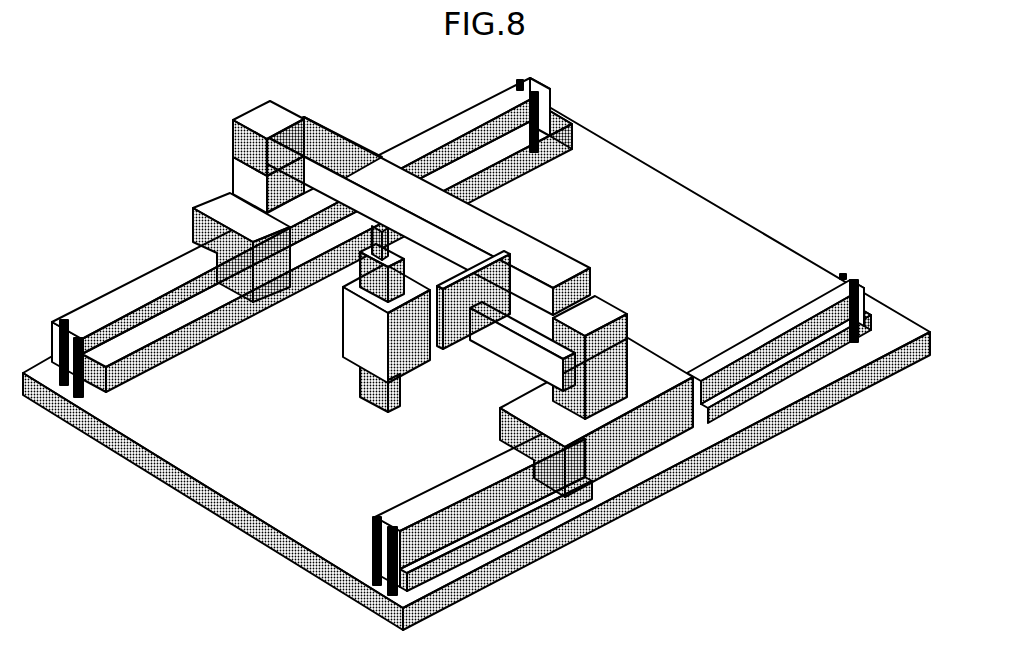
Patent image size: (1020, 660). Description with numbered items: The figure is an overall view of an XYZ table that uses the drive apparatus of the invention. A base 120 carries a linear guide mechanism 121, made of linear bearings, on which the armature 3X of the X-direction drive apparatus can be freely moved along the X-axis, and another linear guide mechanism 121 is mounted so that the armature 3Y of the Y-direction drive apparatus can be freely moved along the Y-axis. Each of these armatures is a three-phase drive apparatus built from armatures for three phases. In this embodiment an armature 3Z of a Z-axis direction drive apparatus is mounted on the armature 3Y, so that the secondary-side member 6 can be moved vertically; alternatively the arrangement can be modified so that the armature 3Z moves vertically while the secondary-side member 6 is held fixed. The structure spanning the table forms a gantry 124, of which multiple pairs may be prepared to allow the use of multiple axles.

The base 120 is at (197, 465).
The linear guide mechanism 121 is at (102, 360).
The secondary-side member 6 is at (133, 277).
The armature of the X-direction drive apparatus 3X is at (210, 200).
The armature of the Y-direction drive apparatus 3Y is at (488, 258).
The armature of the Z-axis direction drive apparatus 3Z is at (343, 353).
The gantry 124 is at (248, 107).